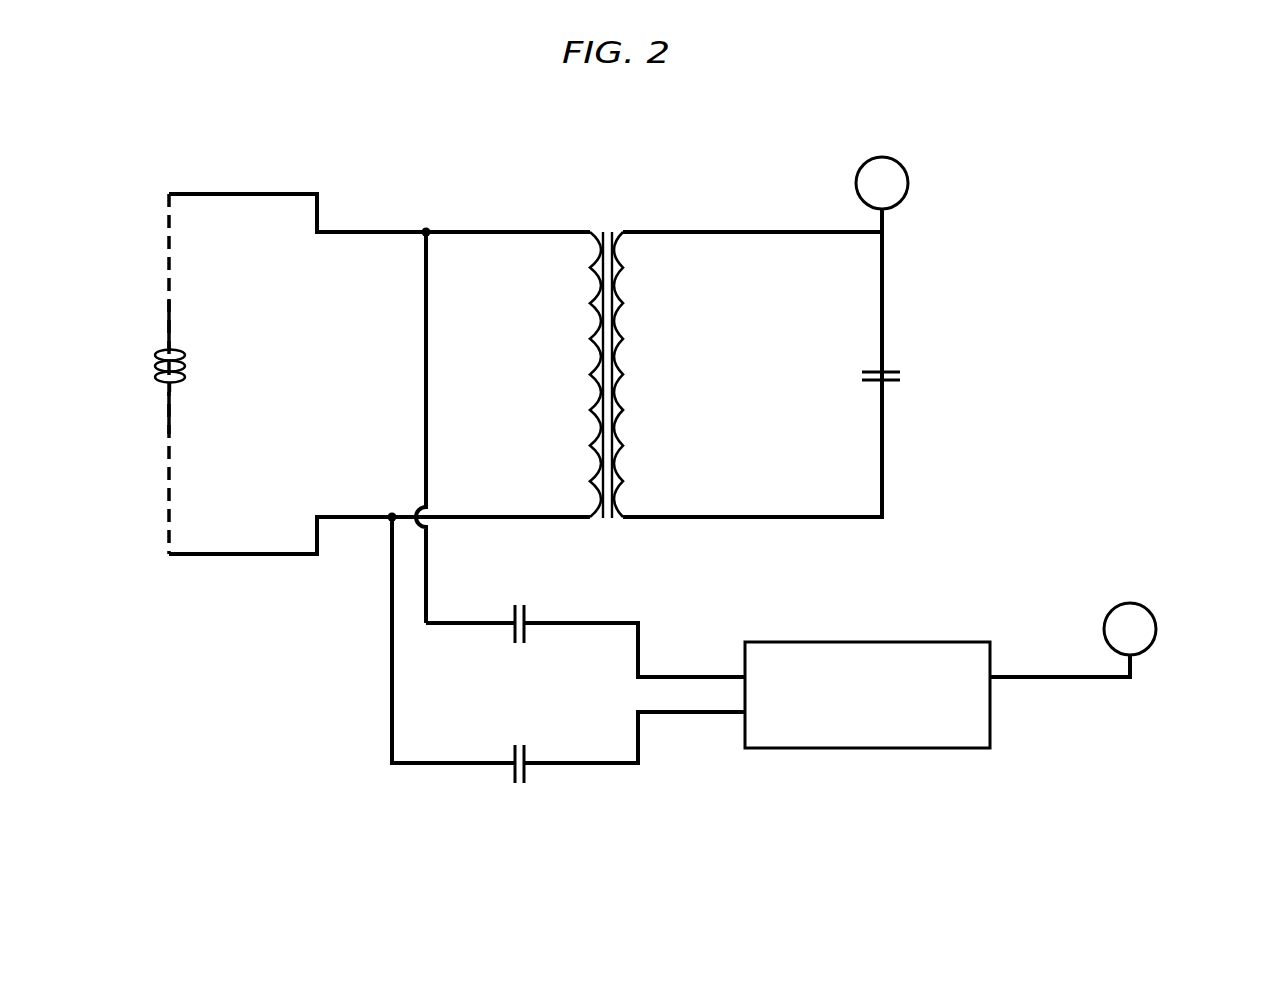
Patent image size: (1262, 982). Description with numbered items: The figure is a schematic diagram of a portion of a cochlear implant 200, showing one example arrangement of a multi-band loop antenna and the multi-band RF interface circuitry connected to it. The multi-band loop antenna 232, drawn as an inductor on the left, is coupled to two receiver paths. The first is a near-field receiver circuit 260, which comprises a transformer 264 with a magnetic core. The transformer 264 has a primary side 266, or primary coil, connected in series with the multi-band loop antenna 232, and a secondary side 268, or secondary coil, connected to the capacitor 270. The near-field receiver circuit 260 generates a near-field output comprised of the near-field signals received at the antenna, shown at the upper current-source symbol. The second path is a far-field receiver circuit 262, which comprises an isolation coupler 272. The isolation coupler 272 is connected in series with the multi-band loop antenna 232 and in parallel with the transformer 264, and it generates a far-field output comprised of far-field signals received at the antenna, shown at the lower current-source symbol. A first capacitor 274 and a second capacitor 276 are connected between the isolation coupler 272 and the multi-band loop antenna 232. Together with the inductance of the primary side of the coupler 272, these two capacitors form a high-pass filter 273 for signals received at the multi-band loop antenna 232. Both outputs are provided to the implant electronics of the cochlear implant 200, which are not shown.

The cochlear implant 200 is at (900, 84).
The multi-band loop antenna 232 is at (198, 340).
The near-field receiver circuit 260 is at (693, 134).
The transformer 264 is at (581, 325).
The primary side 266 is at (590, 342).
The secondary side 268 is at (624, 378).
The capacitor 270 is at (869, 371).
The isolation coupler 272 is at (872, 749).
The high-pass filter 273 is at (536, 681).
The first capacitor 274 is at (526, 630).
The second capacitor 276 is at (526, 770).
The far-field receiver circuit 262 is at (676, 841).